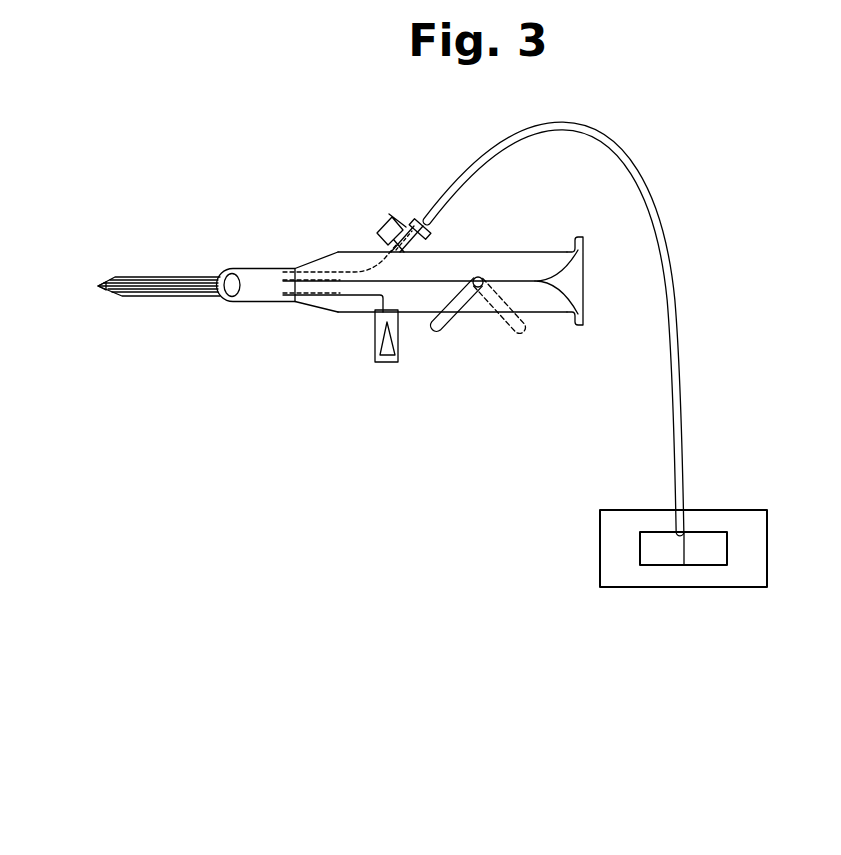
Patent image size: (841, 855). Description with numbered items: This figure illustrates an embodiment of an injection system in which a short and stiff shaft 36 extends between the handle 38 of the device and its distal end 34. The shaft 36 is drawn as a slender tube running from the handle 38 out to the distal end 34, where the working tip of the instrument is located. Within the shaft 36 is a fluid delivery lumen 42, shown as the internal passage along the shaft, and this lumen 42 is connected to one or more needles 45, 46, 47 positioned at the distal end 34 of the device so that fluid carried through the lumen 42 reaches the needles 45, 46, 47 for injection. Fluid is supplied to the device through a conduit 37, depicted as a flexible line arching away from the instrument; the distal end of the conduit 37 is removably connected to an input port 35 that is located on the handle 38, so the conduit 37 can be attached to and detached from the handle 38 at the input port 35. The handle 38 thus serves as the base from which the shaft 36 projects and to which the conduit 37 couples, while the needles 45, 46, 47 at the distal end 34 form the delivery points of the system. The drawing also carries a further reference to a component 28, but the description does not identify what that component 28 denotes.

The distal end 34 is at (82, 253).
The housing body 28 is at (420, 298).
The input port 35 is at (415, 217).
The shaft 36 is at (270, 264).
The conduit 37 is at (612, 135).
The handle 38 is at (622, 534).
The fluid delivery lumen 42 is at (253, 282).
The needle 45 is at (128, 276).
The needle 46 is at (108, 288).
The needle 47 is at (137, 298).